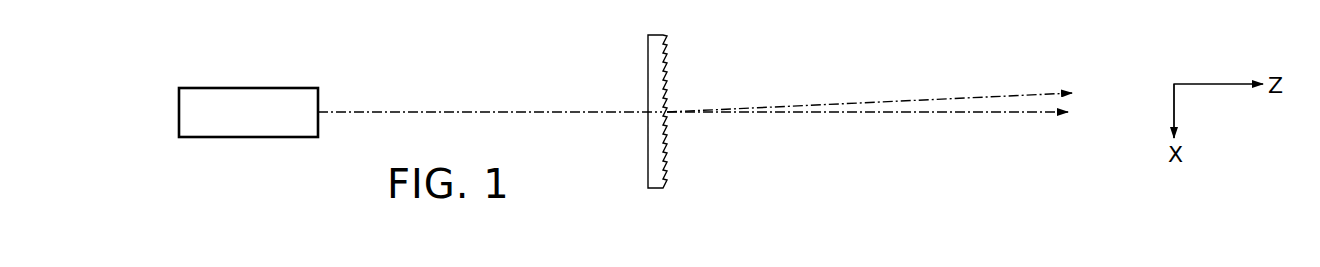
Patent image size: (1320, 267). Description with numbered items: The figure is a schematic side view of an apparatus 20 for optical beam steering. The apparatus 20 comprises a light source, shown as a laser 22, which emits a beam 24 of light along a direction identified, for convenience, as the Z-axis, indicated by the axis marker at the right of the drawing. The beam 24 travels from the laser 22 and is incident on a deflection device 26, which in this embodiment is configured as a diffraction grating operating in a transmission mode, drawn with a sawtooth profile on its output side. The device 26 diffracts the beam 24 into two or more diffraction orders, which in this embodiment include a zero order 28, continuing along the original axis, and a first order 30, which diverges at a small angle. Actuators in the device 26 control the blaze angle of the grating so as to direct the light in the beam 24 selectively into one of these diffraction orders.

The apparatus 20 is at (158, 62).
The laser 22 is at (270, 88).
The beam 24 is at (443, 112).
The deflection device 26 is at (648, 188).
The zero order 28 is at (842, 113).
The first order 30 is at (798, 105).